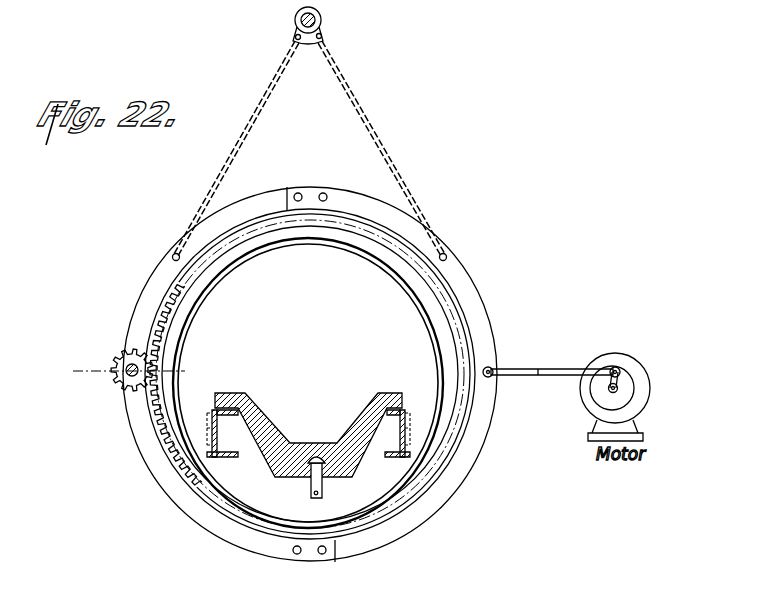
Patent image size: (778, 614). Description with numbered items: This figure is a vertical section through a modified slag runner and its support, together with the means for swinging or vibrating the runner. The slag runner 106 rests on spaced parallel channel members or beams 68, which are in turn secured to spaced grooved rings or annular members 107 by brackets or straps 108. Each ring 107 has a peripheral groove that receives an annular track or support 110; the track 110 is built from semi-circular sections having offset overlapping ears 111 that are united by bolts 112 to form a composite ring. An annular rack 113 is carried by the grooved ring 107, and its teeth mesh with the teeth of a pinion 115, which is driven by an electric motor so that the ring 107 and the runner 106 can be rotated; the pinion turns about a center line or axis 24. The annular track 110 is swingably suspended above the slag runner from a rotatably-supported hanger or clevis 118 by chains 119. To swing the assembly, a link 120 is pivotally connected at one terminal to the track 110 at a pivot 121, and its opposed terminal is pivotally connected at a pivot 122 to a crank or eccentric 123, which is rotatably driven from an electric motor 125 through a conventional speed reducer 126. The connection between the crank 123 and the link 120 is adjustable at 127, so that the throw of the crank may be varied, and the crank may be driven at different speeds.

The pinion shaft center line 24 is at (211, 371).
The channel members or beams 68 is at (208, 453).
The slag runner 106 is at (255, 407).
The grooved rings or annular members 107 is at (207, 293).
The brackets or straps 108 is at (205, 433).
The annular track or support 110 is at (455, 264).
The offset overlapping ears 111 is at (298, 187).
The bolts 112 is at (327, 196).
The annular rack 113 is at (152, 316).
The pinion 115 is at (118, 388).
The hangers or clevices 118 is at (322, 24).
The chains 119 is at (263, 101).
The link 120 is at (544, 369).
The pivotal connection of link to track 121 is at (493, 369).
The pivotal connection of link to crank 122 is at (617, 368).
The crank or eccentric 123 is at (620, 384).
The electric motor 125 is at (637, 415).
The speed reducer 126 is at (595, 393).
The adjustable connection 127 is at (620, 383).